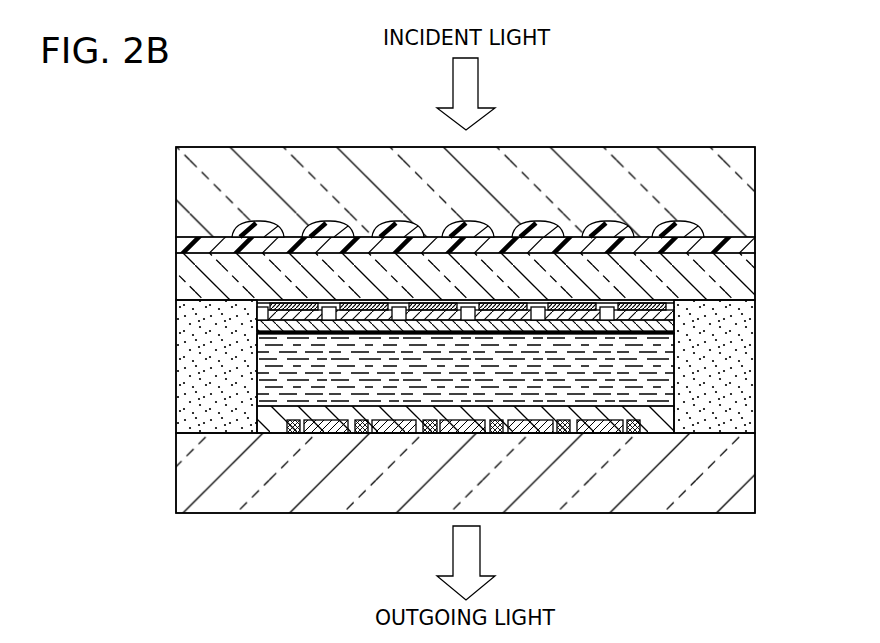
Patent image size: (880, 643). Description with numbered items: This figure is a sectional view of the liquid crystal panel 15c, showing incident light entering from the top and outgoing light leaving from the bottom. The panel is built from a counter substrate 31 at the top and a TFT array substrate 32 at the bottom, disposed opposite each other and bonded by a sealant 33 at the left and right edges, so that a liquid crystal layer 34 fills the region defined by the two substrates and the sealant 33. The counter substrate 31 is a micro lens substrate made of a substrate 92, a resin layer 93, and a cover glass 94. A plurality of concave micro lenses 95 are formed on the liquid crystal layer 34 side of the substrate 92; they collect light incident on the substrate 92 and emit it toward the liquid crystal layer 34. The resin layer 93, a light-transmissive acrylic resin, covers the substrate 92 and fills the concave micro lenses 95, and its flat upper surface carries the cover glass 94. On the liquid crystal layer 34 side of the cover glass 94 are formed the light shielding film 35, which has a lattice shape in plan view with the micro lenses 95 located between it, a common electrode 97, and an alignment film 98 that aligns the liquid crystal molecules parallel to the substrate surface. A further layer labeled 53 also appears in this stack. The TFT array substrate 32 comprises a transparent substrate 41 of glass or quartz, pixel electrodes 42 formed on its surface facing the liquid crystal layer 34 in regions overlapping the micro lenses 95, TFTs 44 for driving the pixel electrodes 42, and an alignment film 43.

The liquid crystal panel 15c is at (719, 137).
The counter substrate 31 is at (170, 300).
The TFT array substrate 32 is at (170, 513).
The sealant 33 is at (750, 345).
The liquid crystal layer 34 is at (257, 358).
The light shielding film 35 is at (287, 303).
The transparent substrate 41 is at (750, 462).
The pixel electrodes 42 is at (589, 434).
The alignment film 43 is at (676, 415).
The TFTs 44 is at (633, 434).
The protective layer 53 is at (648, 302).
The substrate 92 is at (752, 172).
The resin layer 93 is at (501, 172).
The cover glass 94 is at (750, 292).
The micro lenses 95 is at (615, 222).
The common electrode 97 is at (541, 303).
The alignment film 98 is at (397, 303).